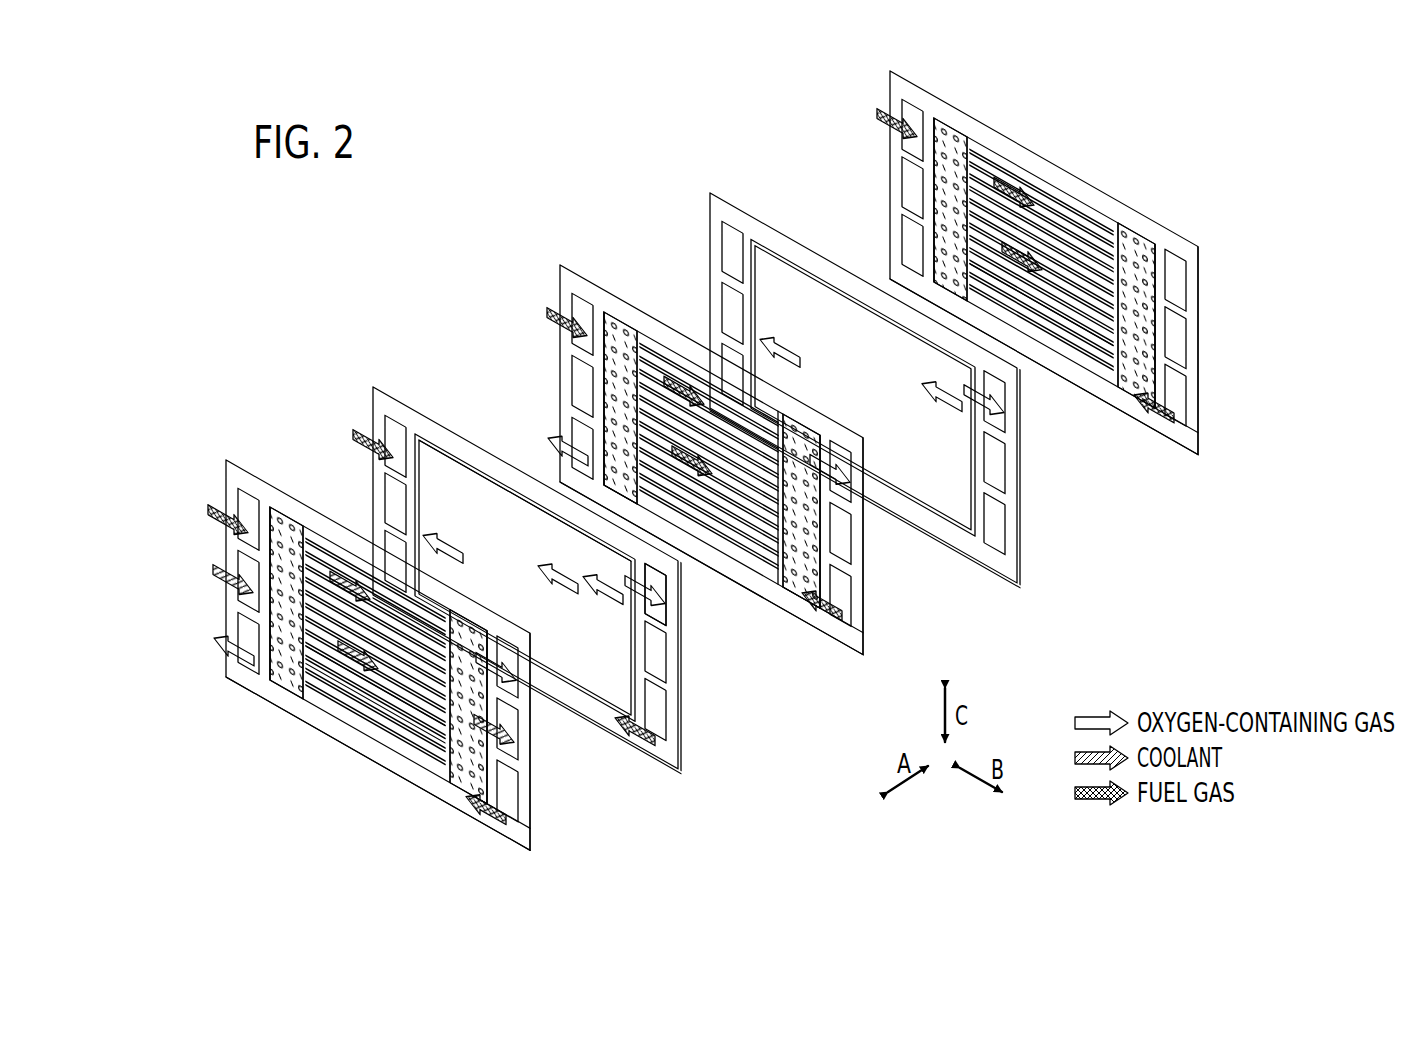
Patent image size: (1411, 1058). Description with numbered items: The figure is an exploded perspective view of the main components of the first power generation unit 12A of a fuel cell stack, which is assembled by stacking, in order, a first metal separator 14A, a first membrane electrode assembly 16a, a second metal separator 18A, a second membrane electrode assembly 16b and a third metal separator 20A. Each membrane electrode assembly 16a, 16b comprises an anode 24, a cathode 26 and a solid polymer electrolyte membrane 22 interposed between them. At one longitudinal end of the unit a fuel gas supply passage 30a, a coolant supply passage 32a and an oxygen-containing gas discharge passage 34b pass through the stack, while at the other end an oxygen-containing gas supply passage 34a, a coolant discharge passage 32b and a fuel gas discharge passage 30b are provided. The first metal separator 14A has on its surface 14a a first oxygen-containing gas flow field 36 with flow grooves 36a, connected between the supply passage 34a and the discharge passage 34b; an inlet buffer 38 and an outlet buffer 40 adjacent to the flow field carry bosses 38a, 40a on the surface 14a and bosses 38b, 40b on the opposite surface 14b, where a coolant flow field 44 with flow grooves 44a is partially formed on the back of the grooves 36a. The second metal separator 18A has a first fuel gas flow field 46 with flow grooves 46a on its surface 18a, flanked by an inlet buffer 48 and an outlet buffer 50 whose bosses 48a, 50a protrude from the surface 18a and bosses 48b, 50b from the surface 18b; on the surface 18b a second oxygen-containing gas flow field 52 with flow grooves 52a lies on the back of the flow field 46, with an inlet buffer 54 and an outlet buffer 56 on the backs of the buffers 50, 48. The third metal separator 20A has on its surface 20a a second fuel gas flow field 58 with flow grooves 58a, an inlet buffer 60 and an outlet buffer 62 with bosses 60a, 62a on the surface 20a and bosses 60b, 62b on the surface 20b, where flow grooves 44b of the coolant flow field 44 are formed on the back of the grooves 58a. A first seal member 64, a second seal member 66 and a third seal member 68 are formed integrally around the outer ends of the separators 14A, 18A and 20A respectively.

The first power generation unit 12A is at (357, 275).
The first metal separator 14A is at (228, 461).
The surface of the first metal separator 14a is at (528, 812).
The surface of the first metal separator 14b is at (515, 838).
The first membrane electrode assembly 16a is at (374, 388).
The second membrane electrode assembly 16b is at (710, 193).
The second metal separator 18A is at (561, 267).
The surface of the second metal separator 18a is at (853, 640).
The surface of the second metal separator 18b is at (860, 622).
The third metal separator 20A is at (890, 69).
The surface of the third metal separator 20a is at (1188, 447).
The surface of the third metal separator 20b is at (1195, 426).
The solid polymer electrolyte membrane 22 is at (466, 452).
The anode 24 is at (492, 497).
The cathode 26 is at (438, 457).
The fuel gas supply passage 30a is at (245, 498).
The fuel gas discharge passage 30b is at (512, 785).
The coolant supply passage 32a is at (245, 556).
The coolant discharge passage 32b is at (512, 742).
The oxygen-containing gas supply passage 34a is at (517, 644).
The oxygen-containing gas discharge passage 34b is at (245, 622).
The first oxygen-containing gas flow field 36 is at (398, 688).
The flow grooves 36a is at (433, 777).
The inlet buffer 38 is at (544, 588).
The bosses 38a is at (496, 648).
The bosses 38b is at (458, 617).
The outlet buffer 40 is at (346, 472).
The bosses 40a is at (312, 532).
The bosses 40b is at (277, 513).
The coolant flow field 44 is at (357, 717).
The flow grooves 44a is at (427, 752).
The flow grooves 44b is at (1092, 395).
The first fuel gas flow field 46 is at (737, 503).
The flow grooves 46a is at (773, 580).
The inlet buffer 48 is at (680, 279).
The bosses 48a is at (641, 336).
The bosses 48b is at (612, 310).
The outlet buffer 50 is at (879, 393).
The bosses 50a is at (820, 450).
The bosses 50b is at (796, 414).
The second oxygen-containing gas flow field 52 is at (571, 592).
The flow grooves 52a is at (745, 565).
The inlet buffer 54 is at (847, 475).
The outlet buffer 56 is at (641, 356).
The second fuel gas flow field 58 is at (995, 244).
The flow grooves 58a is at (1090, 352).
The inlet buffer 60 is at (936, 55).
The bosses 60a is at (942, 125).
The bosses 60b is at (968, 133).
The outlet buffer 62 is at (1213, 202).
The bosses 62a is at (1127, 236).
The bosses 62b is at (1163, 248).
The first seal member 64 is at (493, 827).
The second seal member 66 is at (827, 636).
The third seal member 68 is at (1161, 440).